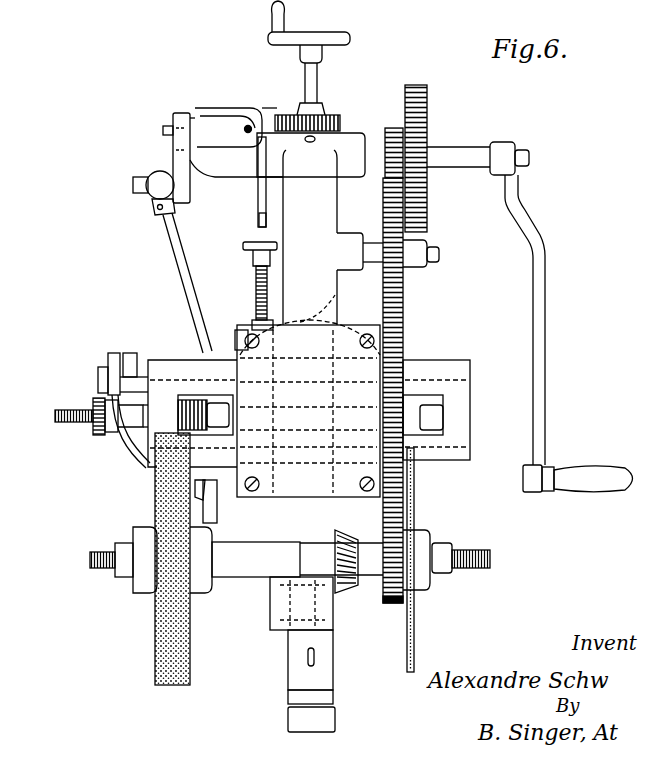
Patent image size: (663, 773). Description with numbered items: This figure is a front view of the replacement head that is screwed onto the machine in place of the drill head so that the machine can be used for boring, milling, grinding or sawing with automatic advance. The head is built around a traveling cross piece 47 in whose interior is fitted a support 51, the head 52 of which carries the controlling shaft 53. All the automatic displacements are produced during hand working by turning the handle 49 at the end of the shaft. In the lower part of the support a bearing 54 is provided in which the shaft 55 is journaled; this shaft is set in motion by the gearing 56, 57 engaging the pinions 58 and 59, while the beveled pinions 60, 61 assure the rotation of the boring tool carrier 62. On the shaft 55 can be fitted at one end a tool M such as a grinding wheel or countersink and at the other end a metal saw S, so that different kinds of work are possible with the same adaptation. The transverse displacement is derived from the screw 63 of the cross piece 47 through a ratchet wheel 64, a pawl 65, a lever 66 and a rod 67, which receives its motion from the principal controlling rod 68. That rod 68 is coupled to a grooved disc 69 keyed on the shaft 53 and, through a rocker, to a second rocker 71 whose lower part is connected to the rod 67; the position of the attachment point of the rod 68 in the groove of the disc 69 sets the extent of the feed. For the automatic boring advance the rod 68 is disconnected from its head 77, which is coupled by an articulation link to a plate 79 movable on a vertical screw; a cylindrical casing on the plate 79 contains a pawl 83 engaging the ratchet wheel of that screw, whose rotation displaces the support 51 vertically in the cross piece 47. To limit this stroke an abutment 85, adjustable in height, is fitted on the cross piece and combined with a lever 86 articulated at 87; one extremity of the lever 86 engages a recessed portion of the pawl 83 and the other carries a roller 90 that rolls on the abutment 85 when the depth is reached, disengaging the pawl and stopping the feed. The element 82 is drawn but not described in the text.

The cross piece 47 is at (308, 408).
The handle 49 is at (538, 396).
The support 51 is at (361, 251).
The head 52 is at (349, 142).
The controlling shaft 53 is at (452, 150).
The bearing 54 is at (236, 577).
The shaft 55 is at (463, 556).
The gearing 56 is at (398, 294).
The gearing 57 is at (403, 350).
The pinion 58 is at (394, 128).
The pinion 59 is at (393, 612).
The beveled pinion 60 is at (350, 586).
The beveled pinion 61 is at (284, 597).
The boring tool carrier 62 is at (288, 716).
The screw 63 is at (190, 397).
The ratchet wheel 64 is at (97, 430).
The pawl 65 is at (98, 383).
The lever 66 is at (112, 353).
The rod 67 is at (140, 458).
The principal controlling rod 68 is at (187, 286).
The grooved disc 69 is at (173, 147).
The rocker 71 is at (217, 511).
The head 77 is at (156, 206).
The plate 79 is at (170, 130).
The arm 82 is at (246, 114).
The pawl 83 is at (284, 115).
The abutment 85 is at (256, 281).
The lever 86 is at (258, 190).
The articulation 87 is at (246, 126).
The roller 90 is at (259, 224).
The tool M is at (155, 629).
The metal saw S is at (415, 626).